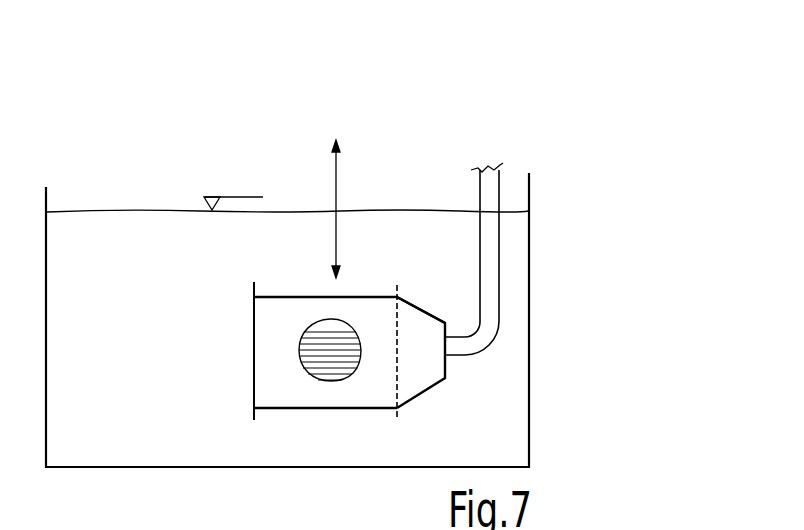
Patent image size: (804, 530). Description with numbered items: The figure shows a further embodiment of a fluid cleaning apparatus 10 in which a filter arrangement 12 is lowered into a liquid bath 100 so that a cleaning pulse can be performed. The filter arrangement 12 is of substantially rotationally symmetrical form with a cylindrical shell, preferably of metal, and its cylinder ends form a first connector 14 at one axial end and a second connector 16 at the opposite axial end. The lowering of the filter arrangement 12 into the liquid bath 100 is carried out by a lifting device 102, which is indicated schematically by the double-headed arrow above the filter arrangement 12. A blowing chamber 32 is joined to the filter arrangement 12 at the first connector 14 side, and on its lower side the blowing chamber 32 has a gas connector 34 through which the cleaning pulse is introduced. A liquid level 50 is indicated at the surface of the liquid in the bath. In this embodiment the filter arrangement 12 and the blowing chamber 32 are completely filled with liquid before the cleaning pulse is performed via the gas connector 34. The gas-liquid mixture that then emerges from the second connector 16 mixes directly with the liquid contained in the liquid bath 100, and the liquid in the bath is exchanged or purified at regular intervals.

The filter cleaning apparatus 10 is at (413, 118).
The filter arrangement 12 is at (298, 295).
The first connector 14 is at (400, 323).
The second connector 16 is at (248, 347).
The blowing chamber 32 is at (415, 398).
The gas connector 34 is at (477, 342).
The liquid level 50 is at (240, 197).
The liquid bath 100 is at (155, 393).
The lifting device 102 is at (335, 194).